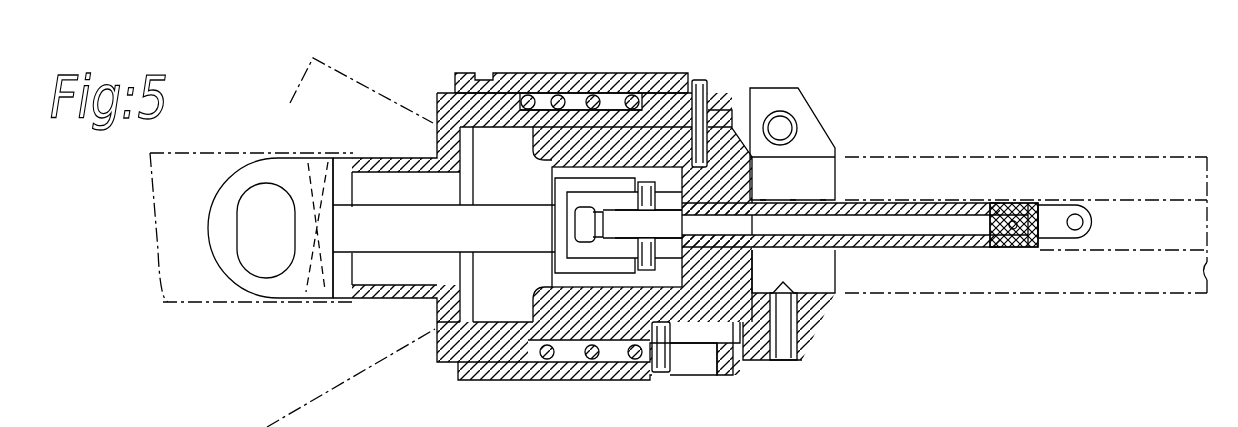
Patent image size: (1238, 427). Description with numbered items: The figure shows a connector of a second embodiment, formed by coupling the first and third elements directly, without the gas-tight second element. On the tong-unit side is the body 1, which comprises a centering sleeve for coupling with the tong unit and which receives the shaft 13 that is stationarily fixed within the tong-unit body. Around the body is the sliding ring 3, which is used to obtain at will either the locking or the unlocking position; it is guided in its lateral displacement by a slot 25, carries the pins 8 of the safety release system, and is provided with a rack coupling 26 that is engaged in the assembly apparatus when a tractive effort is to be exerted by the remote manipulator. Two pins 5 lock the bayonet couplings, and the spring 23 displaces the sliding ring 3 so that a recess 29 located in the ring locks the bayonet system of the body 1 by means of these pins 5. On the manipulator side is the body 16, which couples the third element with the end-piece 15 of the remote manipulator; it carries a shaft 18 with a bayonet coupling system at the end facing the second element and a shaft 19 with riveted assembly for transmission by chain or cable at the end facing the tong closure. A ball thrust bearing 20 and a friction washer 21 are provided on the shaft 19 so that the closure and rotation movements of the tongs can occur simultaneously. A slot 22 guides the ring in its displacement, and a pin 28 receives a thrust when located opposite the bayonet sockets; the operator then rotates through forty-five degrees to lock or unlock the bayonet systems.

The body 1 is at (442, 112).
The sliding ring 3 is at (567, 93).
The pins 5 is at (718, 85).
The pins of the safety release system 8 is at (663, 373).
The shaft 13 is at (292, 173).
The end-piece of the remote manipulator 15 is at (938, 165).
The body 16 is at (807, 327).
The shaft 18 is at (858, 240).
The shaft 19 is at (588, 222).
The ball thrust bearing 20 is at (593, 245).
The friction washer 21 is at (997, 247).
The slot 22 is at (698, 362).
The spring 23 is at (590, 95).
The slot 25 is at (522, 102).
The rack coupling 26 is at (487, 78).
The pin 28 is at (647, 247).
The recess 29 is at (733, 97).